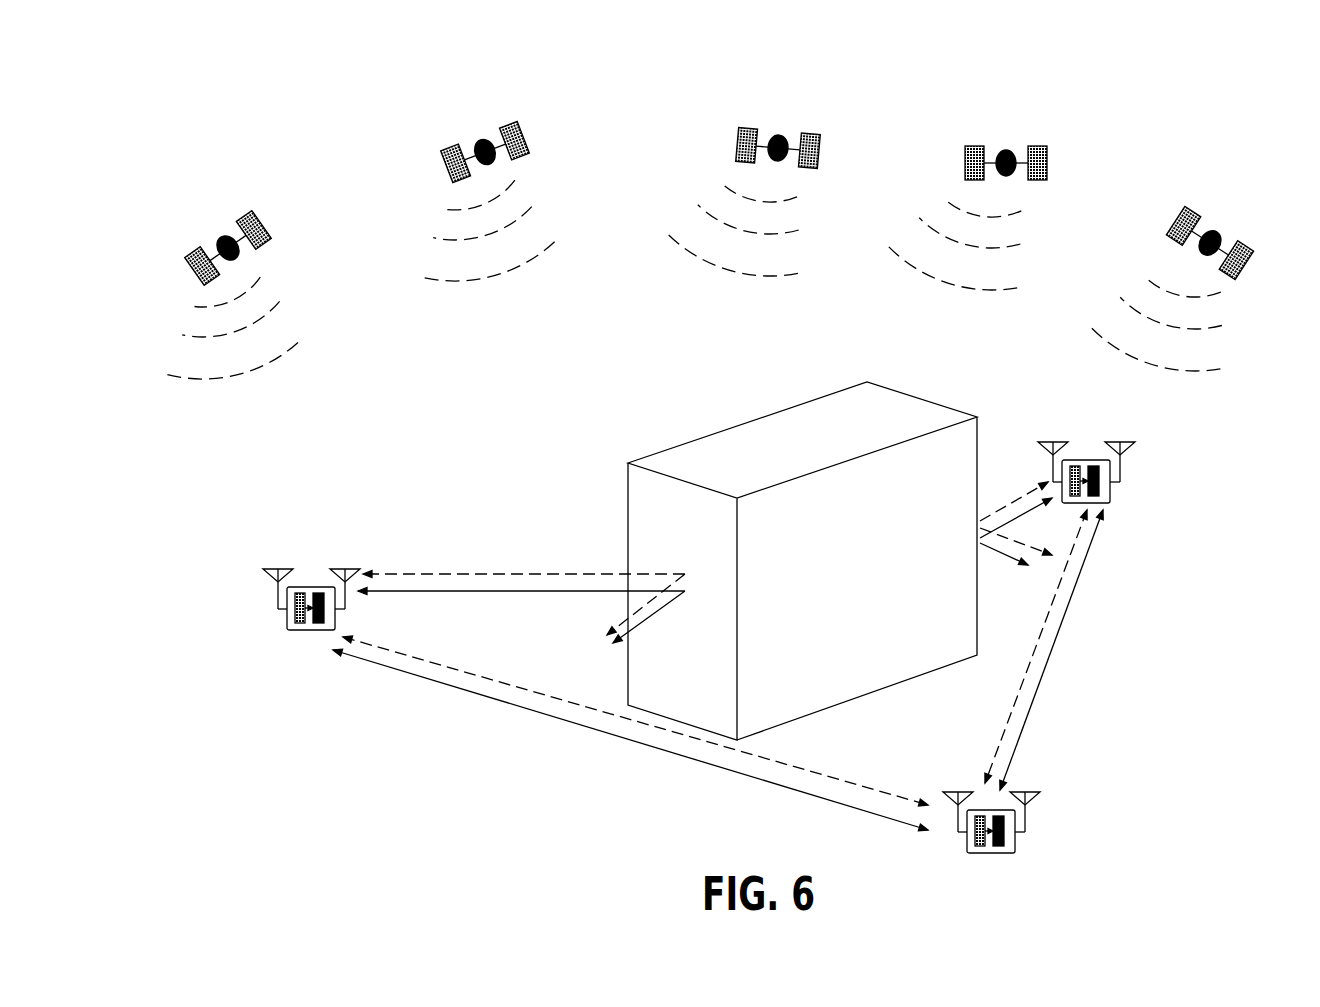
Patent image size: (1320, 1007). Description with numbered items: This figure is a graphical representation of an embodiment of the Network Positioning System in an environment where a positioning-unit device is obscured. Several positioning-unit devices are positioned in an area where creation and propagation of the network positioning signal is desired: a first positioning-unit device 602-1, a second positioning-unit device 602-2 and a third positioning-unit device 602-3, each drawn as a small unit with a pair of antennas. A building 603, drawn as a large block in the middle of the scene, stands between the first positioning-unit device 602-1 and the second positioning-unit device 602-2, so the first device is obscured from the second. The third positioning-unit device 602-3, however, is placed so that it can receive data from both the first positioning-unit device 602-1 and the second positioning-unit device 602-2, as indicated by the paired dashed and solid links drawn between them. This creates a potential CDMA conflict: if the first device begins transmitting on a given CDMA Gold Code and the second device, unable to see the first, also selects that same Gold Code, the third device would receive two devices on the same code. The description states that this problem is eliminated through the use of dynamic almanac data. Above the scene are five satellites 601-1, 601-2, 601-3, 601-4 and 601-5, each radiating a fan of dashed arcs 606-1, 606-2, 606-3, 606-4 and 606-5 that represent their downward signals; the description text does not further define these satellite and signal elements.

The GPS satellite 601-1 is at (232, 212).
The GPS satellite 601-2 is at (493, 123).
The GPS satellite 601-3 is at (773, 115).
The GPS satellite 601-4 is at (1015, 138).
The GPS satellite 601-5 is at (1225, 228).
The first positioning-unit device 602-1 is at (302, 637).
The second positioning-unit device 602-2 is at (1123, 488).
The third positioning-unit device 602-3 is at (1023, 840).
The building 603 is at (623, 510).
The satellite signal 606-1 is at (298, 347).
The satellite signal 606-2 is at (547, 262).
The satellite signal 606-3 is at (787, 283).
The satellite signal 606-4 is at (988, 307).
The satellite signal 606-5 is at (1227, 368).